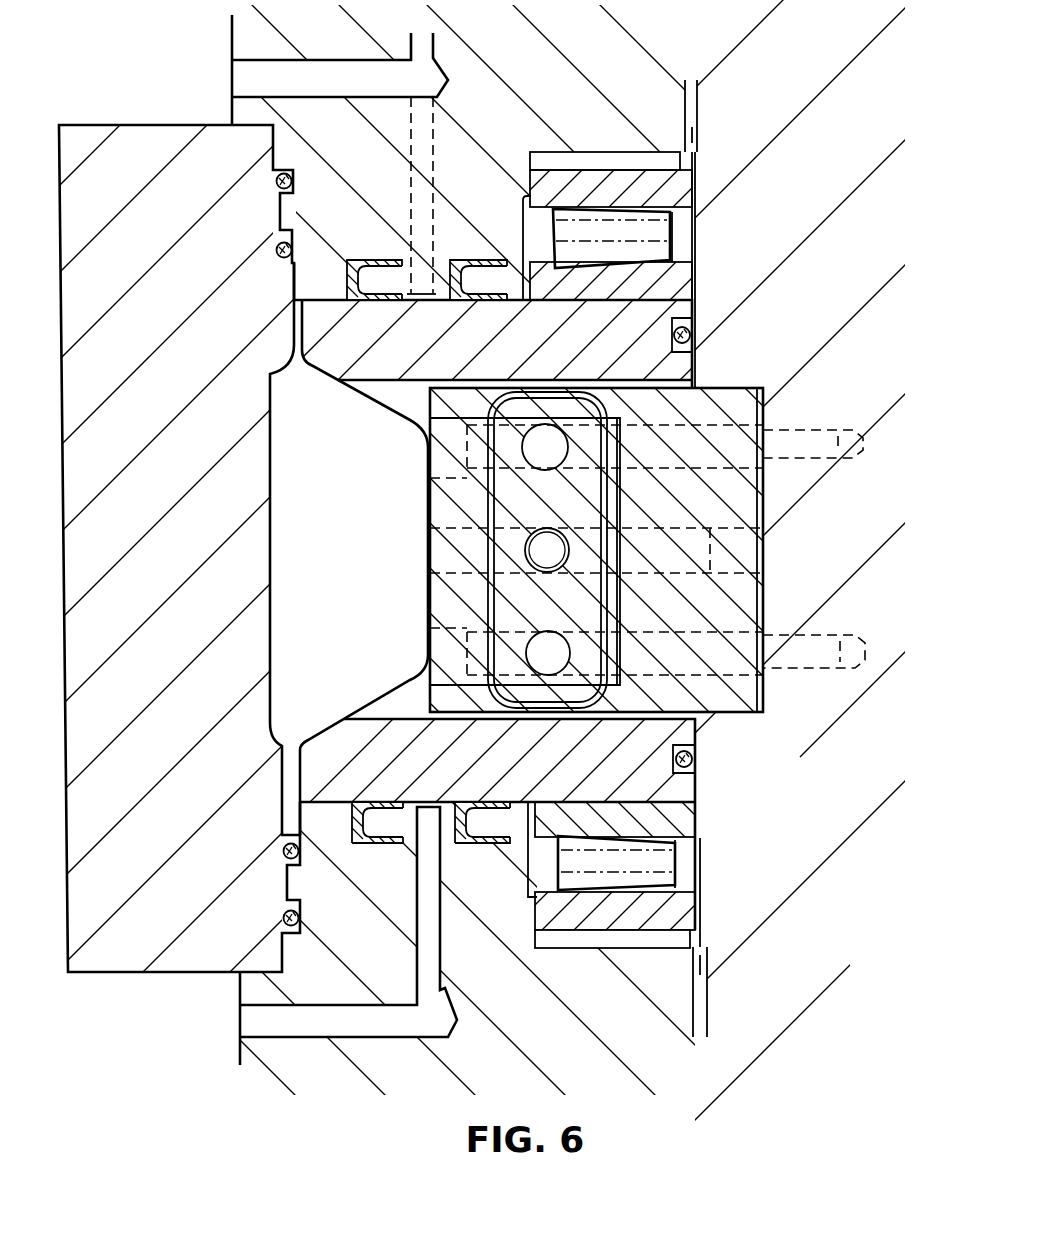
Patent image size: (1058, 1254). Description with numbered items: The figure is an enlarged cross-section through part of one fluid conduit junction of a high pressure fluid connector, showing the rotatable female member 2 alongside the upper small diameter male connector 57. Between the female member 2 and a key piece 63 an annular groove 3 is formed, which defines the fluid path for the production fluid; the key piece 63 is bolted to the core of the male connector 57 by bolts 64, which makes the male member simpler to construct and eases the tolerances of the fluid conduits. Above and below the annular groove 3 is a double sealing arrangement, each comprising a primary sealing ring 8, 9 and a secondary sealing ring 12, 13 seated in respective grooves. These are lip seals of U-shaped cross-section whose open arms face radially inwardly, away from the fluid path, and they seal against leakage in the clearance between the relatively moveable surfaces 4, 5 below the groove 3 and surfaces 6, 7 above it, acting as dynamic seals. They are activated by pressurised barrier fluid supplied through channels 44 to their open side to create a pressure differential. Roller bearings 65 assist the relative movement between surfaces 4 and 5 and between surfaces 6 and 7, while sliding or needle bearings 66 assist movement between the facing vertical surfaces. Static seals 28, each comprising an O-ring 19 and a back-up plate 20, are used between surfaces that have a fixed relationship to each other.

The female member 2 is at (543, 93).
The annular groove 3 is at (334, 553).
The relatively moveable surface 4 is at (332, 807).
The relatively moveable surface 5 is at (328, 795).
The surface 6 is at (317, 300).
The surface 7 is at (340, 303).
The primary sealing ring 8 is at (353, 843).
The primary sealing ring 9 is at (353, 260).
The secondary sealing ring 12 is at (458, 843).
The secondary sealing ring 13 is at (457, 260).
The O-ring 19 is at (281, 191).
The back-up plate 20 is at (277, 173).
The static seal 28 is at (692, 335).
The channel 44 is at (331, 78).
The upper small diameter connector 57 is at (798, 178).
The key piece 63 is at (737, 400).
The bolt 64 is at (803, 438).
The roller bearing 65 is at (683, 280).
The sliding or needle bearing 66 is at (698, 127).